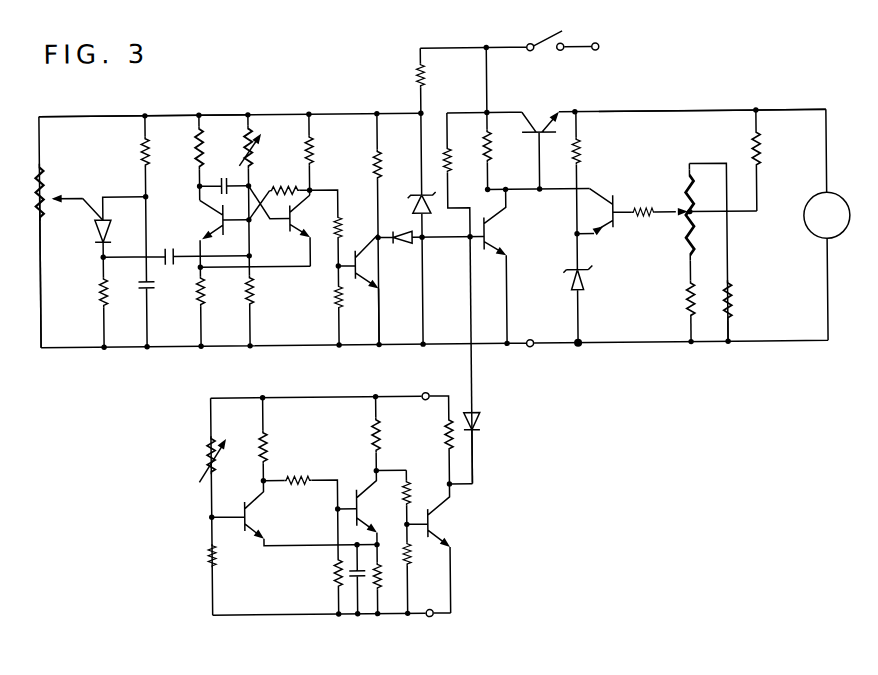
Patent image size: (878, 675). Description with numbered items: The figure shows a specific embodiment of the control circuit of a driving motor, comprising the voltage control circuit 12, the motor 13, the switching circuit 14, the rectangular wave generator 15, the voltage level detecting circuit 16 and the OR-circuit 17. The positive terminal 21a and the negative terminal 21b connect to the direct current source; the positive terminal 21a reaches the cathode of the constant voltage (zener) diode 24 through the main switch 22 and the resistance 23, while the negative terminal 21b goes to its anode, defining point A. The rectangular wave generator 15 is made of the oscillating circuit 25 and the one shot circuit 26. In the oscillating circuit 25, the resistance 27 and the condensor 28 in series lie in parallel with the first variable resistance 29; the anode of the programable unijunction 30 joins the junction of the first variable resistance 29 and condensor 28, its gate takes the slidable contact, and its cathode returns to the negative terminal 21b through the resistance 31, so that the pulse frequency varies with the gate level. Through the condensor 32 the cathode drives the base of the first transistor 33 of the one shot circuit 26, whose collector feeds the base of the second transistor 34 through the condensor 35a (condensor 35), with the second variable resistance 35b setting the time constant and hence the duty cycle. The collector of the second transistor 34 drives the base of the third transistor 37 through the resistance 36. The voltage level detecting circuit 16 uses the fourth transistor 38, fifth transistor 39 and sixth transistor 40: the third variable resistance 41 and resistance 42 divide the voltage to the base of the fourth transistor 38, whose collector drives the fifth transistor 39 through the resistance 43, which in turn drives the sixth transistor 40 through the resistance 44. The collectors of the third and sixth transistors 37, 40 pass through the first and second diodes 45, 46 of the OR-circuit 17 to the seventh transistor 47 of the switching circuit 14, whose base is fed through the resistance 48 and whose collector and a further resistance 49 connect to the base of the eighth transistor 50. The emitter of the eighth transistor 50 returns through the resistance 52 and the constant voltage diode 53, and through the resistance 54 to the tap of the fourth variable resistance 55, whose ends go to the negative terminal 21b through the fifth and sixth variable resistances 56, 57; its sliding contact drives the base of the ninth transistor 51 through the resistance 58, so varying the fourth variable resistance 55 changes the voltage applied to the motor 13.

The voltage control circuit 12 is at (707, 108).
The motor 13 is at (838, 204).
The switching circuit 14 is at (521, 297).
The rectangular wave generator 15 is at (236, 106).
The voltage level detecting circuit 16 is at (322, 628).
The OR-circuit 17 is at (427, 291).
The positive terminal 21a is at (616, 36).
The negative terminal 21b is at (544, 357).
The main switch 22 is at (558, 29).
The resistance 23 is at (461, 79).
The constant voltage (zener) diode 24 is at (413, 228).
The oscillating circuit 25 is at (76, 250).
The one shot circuit 26 is at (289, 259).
The resistance 27 is at (162, 198).
The condensor 28 is at (164, 306).
The first variable resistance 29 is at (69, 188).
The programable unijunction (PUJ) 30 is at (121, 227).
The resistance 31 is at (120, 300).
The condensor 32 is at (177, 246).
The first transistor 33 is at (244, 272).
The second transistor 34 is at (314, 190).
The condensor 35 is at (224, 186).
The condensor 35a is at (222, 170).
The second variable resistance 35b is at (275, 150).
The resistance 36 is at (344, 229).
The third transistor 37 is at (374, 289).
The fourth transistor 38 is at (294, 472).
The fifth transistor 39 is at (378, 505).
The sixth transistor 40 is at (454, 516).
The third variable resistance 41 is at (226, 459).
The resistance 42 is at (231, 540).
The resistance 43 is at (310, 530).
The resistance 44 is at (425, 541).
The first diode 45 is at (431, 222).
The second diode 46 is at (490, 443).
The seventh transistor 47 is at (509, 266).
The resistance 48 is at (464, 175).
The resistor 49 is at (535, 120).
The eighth transistor 50 is at (542, 137).
The ninth transistor 51 is at (588, 208).
The resistance 52 is at (596, 190).
The constant voltage diode 53 is at (592, 267).
The resistance 54 is at (774, 160).
The fourth variable resistance 55 is at (683, 186).
The fifth variable resistance 56 is at (673, 309).
The sixth variable resistance 57 is at (745, 309).
The resistor 58 is at (659, 197).